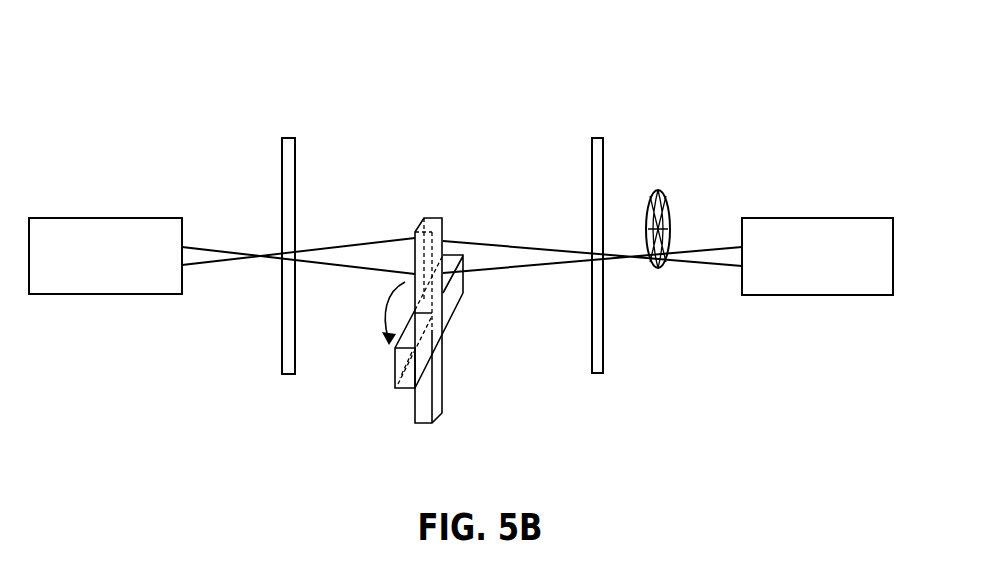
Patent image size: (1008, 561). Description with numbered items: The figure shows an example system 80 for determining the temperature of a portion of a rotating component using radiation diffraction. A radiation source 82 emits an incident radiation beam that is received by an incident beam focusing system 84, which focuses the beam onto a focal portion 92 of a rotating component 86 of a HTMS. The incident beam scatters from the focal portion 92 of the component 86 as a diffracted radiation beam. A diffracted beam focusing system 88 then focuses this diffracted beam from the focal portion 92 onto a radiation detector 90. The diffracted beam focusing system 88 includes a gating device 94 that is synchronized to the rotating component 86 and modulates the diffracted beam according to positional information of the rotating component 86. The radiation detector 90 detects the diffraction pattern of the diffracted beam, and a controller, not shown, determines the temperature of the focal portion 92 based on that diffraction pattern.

The optical measurement system 80 is at (122, 77).
The radiation source 82 is at (105, 217).
The incident beam focusing system 84 is at (288, 137).
The rotating component 86 is at (445, 237).
The diffracted beam focusing system 88 is at (597, 137).
The radiation detector 90 is at (818, 218).
The focal portion 92 is at (423, 217).
The gating device 94 is at (660, 190).